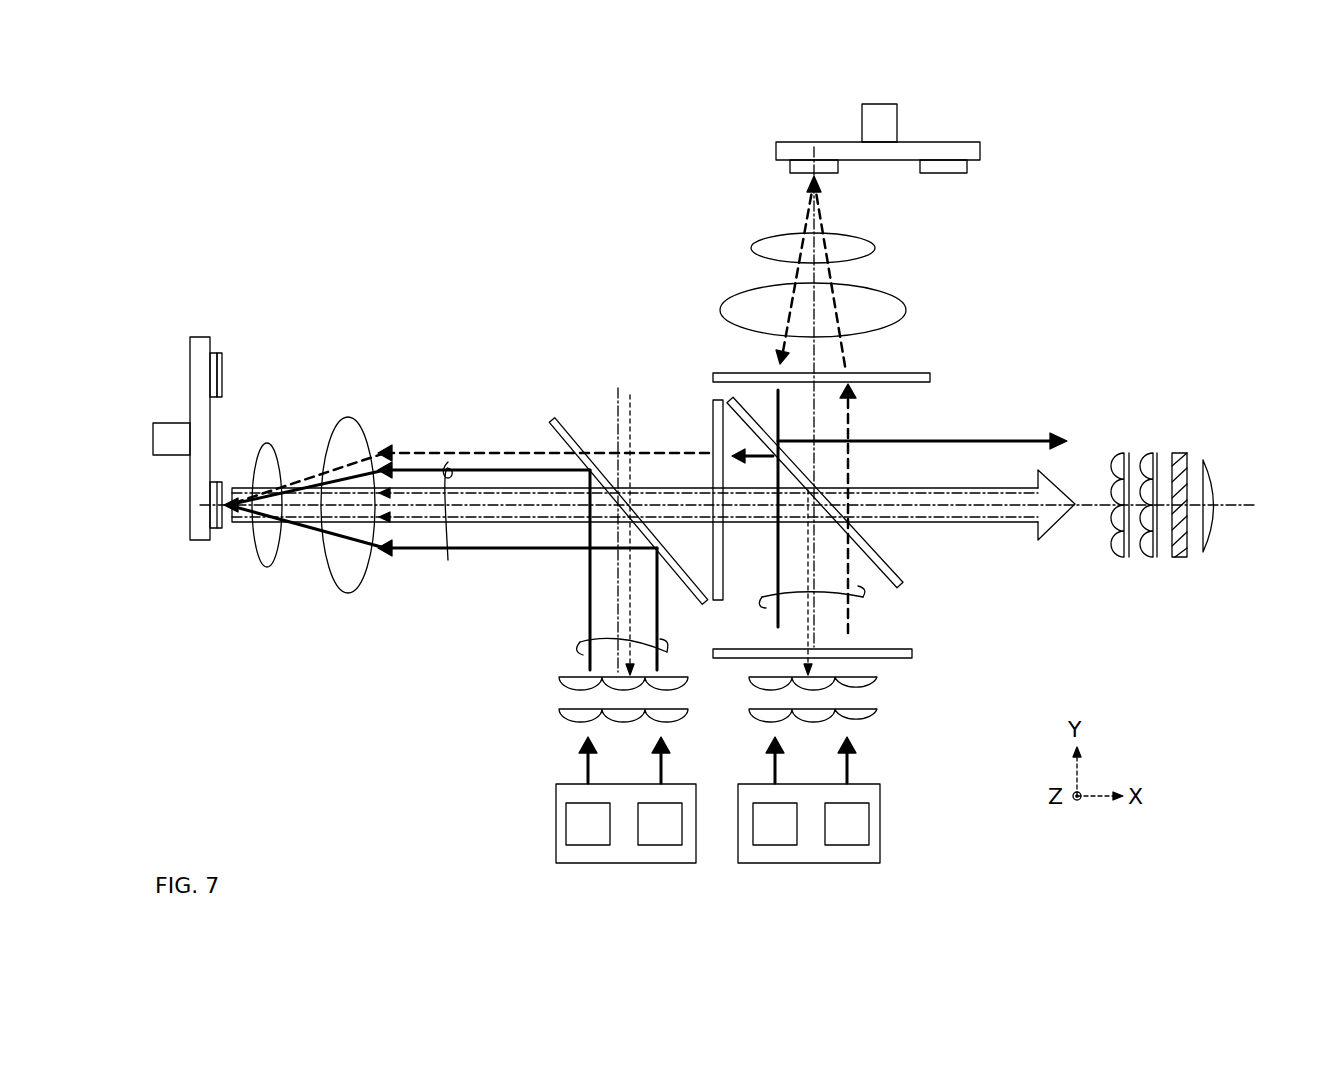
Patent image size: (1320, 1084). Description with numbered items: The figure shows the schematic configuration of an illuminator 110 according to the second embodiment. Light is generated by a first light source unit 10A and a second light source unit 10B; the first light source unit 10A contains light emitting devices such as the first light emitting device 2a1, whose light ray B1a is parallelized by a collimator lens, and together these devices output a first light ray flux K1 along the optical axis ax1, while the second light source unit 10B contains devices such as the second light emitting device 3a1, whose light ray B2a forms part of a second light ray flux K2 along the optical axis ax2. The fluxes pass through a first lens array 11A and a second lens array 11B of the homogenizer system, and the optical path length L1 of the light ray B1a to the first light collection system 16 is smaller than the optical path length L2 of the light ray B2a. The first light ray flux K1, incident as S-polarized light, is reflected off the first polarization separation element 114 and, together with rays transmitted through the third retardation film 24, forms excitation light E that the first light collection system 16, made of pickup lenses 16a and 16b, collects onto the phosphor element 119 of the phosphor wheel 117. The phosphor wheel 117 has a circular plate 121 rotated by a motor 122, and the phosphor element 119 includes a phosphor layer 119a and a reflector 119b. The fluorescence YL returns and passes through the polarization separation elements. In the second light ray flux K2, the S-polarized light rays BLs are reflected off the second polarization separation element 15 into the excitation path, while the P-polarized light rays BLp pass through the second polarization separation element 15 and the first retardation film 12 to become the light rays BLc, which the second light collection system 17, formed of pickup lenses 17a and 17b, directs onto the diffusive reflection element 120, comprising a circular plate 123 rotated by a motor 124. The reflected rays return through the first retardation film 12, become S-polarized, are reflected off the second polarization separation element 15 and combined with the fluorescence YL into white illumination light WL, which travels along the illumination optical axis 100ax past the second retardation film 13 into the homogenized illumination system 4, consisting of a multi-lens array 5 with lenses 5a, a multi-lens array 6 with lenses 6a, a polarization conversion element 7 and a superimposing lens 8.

The illuminator 110 is at (565, 283).
The phosphor wheel 117 is at (223, 430).
The circular plate 121 is at (196, 375).
The motor 122 is at (170, 455).
The phosphor element 119 is at (246, 309).
The phosphor layer 119a is at (221, 353).
The reflector 119b is at (212, 353).
The first light collection system 16 is at (310, 559).
The pickup lens 16a is at (333, 588).
The pickup lens 16b is at (265, 565).
The first polarization separation element 114 is at (555, 416).
The third retardation film 24 is at (712, 430).
The first retardation film 12 is at (930, 380).
The second retardation film 13 is at (912, 653).
The second polarization separation element 15 is at (885, 563).
The second light collection system 17 is at (884, 279).
The pickup lens 17a is at (859, 310).
The pickup lens 17b is at (877, 245).
The diffusive reflection element 120 is at (871, 138).
The circular plate 123 is at (970, 152).
The motor 124 is at (863, 133).
The homogenized illumination system 4 is at (1161, 480).
The multi-lens array 5 is at (1120, 447).
The lens 5a is at (1122, 558).
The multi-lens array 6 is at (1150, 447).
The lens 6a is at (1153, 558).
The polarization conversion element 7 is at (1180, 452).
The superimposing lens 8 is at (1207, 470).
The illumination optical axis 100ax is at (1087, 508).
The first lens array 11A is at (540, 697).
The second lens array 11B is at (903, 699).
The first light source unit 10A is at (557, 824).
The second light source unit 10B is at (878, 824).
The first light emitting device 2a1 is at (566, 830).
The second light emitting device 3a1 is at (869, 830).
The light ray B1a is at (580, 740).
The light ray B2a is at (856, 745).
The first light ray flux K1 is at (582, 644).
The second light ray flux K2 is at (865, 600).
The optical path length L1 is at (607, 530).
The optical path length L2 is at (807, 540).
The optical axis ax1 is at (617, 438).
The optical axis ax2 is at (812, 202).
The light rays BLs is at (775, 619).
The light rays BLp is at (850, 627).
The light rays BLc is at (847, 357).
The white illumination light WL is at (1040, 593).
The fluorescence YL is at (978, 527).
The excitation light E is at (450, 465).